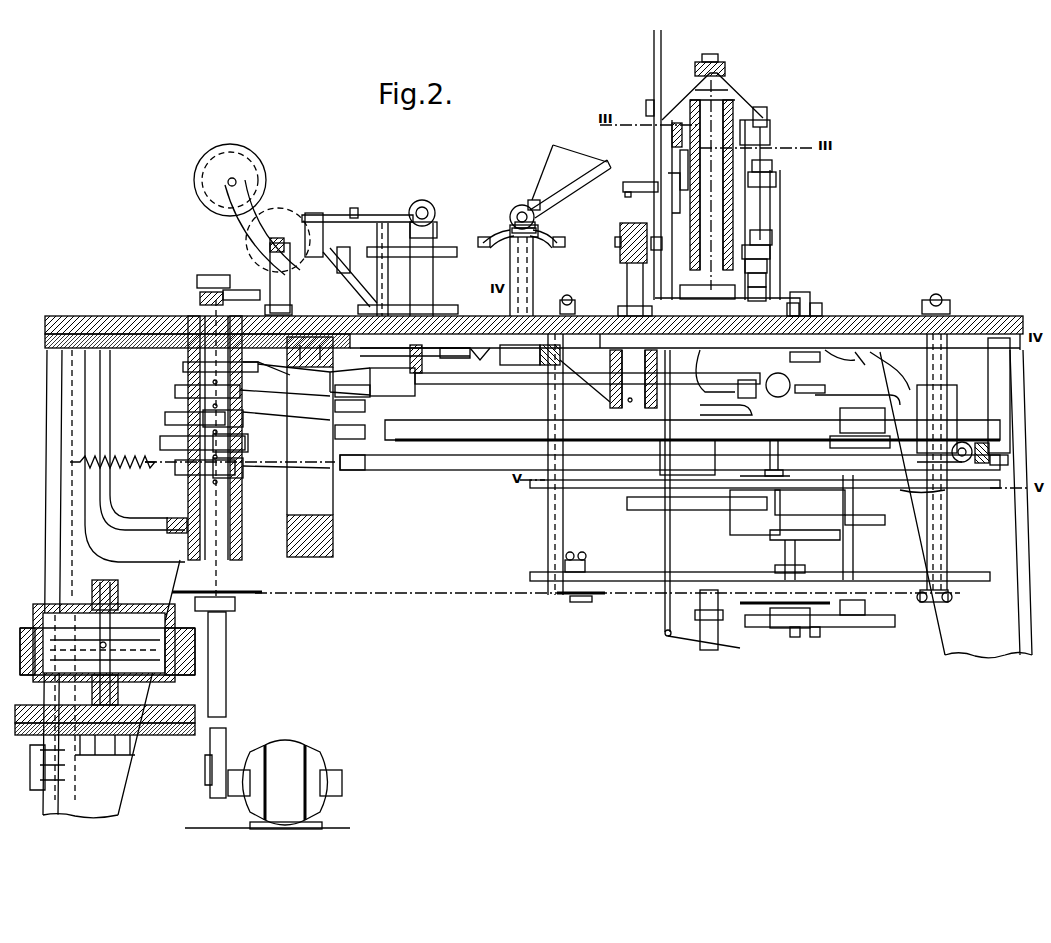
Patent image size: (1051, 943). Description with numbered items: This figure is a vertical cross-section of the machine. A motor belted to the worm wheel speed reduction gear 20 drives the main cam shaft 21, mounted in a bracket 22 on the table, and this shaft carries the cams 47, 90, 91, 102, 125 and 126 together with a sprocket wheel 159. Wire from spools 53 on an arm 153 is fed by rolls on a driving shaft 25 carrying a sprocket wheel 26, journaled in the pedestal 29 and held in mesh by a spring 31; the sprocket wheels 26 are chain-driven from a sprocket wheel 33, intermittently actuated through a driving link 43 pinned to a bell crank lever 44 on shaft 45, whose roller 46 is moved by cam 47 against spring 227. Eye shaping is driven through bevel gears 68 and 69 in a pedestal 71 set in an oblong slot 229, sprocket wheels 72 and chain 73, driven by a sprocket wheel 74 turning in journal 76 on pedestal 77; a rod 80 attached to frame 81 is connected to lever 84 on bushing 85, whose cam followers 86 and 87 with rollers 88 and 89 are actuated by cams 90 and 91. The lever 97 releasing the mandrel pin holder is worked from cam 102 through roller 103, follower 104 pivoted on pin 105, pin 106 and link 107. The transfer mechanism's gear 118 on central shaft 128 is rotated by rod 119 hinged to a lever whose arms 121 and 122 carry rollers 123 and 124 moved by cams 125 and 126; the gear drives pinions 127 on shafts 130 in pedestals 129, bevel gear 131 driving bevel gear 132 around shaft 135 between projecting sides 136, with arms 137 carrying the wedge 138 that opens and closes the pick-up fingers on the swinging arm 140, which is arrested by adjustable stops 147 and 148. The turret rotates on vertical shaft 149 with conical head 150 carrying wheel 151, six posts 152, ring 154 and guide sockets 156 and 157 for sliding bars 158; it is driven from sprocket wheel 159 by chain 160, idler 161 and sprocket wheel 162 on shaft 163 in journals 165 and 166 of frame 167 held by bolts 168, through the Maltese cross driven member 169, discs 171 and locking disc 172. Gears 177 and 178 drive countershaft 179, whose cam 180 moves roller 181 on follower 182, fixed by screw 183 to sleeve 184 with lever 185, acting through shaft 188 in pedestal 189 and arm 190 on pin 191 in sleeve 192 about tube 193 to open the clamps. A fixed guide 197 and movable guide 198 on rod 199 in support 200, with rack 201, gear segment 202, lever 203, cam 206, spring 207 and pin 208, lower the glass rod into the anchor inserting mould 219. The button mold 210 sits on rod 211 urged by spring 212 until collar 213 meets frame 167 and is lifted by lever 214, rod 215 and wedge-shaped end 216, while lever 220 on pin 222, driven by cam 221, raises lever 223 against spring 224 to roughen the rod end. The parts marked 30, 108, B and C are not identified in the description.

The worm wheel speed reduction gear 20 is at (60, 635).
The main cam shaft 21 is at (228, 497).
The bracket 22 is at (110, 490).
The driving shaft 25 is at (377, 288).
The sprocket wheel 26 is at (372, 374).
The pedestal 29 is at (433, 290).
The link 30 is at (454, 346).
The spring 31 is at (479, 347).
The sprocket wheel 33 is at (716, 371).
The driving link 43 is at (492, 470).
The bell crank lever 44 is at (345, 470).
The countershaft 45 is at (333, 530).
The roller 46 is at (245, 478).
The cam 47 is at (175, 470).
The spools 53 is at (255, 178).
The bevel gear 68 is at (425, 200).
The bevel gear 69 is at (437, 232).
The pedestal 71 is at (433, 270).
The sprocket wheel 72 is at (421, 359).
The chain 73 is at (415, 360).
The sprocket wheel 74 is at (842, 361).
The journal 76 is at (805, 363).
The pedestal 77 is at (893, 368).
The rod 80 is at (478, 420).
The frame 81 is at (765, 458).
The lever 84 is at (350, 407).
The bushing 85 is at (365, 445).
The cam follower 86 is at (280, 470).
The cam follower 87 is at (285, 413).
The roller 88 is at (214, 418).
The roller 89 is at (230, 443).
The cam 90 is at (165, 418).
The cam 91 is at (160, 442).
The lever 97 is at (385, 215).
The cam 102 is at (197, 297).
The roller 103 is at (200, 282).
The follower 104 is at (258, 300).
The pin 105 is at (300, 238).
The long pin 106 is at (310, 208).
The link 107 is at (336, 251).
The screw 108 is at (355, 208).
The gear 118 is at (596, 316).
The rod 119 is at (445, 390).
The arm 121 is at (266, 361).
The arm 122 is at (352, 394).
The roller 123 is at (183, 367).
The roller 124 is at (175, 390).
The cam 125 is at (183, 372).
The cam 126 is at (175, 397).
The pinions 127 is at (512, 358).
The shaft 128 is at (605, 402).
The pedestal 129 is at (533, 278).
The shaft 130 is at (538, 358).
The bevel gear 131 is at (536, 230).
The bevel gear 132 is at (510, 213).
The shaft 135 is at (528, 203).
The projecting sides 136 is at (515, 226).
The arms 137 is at (545, 170).
The wedge 138 is at (590, 148).
The tubular swinging arm 140 is at (570, 192).
The adjustable stop 147 is at (485, 250).
The adjustable stop 148 is at (555, 250).
The vertical shaft 149 is at (780, 200).
The conical head 150 is at (725, 70).
The wheel 151 is at (750, 100).
The posts 152 is at (767, 120).
The arm 153 is at (240, 228).
The ring 154 is at (772, 237).
The guide socket 156 is at (646, 108).
The guide socket 157 is at (655, 252).
The sliding bars 158 is at (654, 60).
The sprocket wheel 159 is at (250, 598).
The chain 160 is at (398, 597).
The idler 161 is at (555, 598).
The sprocket wheel 162 is at (820, 605).
The shaft 163 is at (795, 556).
The journal 165 is at (805, 570).
The journal 166 is at (760, 518).
The frame 167 is at (975, 484).
The bolts 168 is at (568, 298).
The driven member 169 is at (627, 503).
The discs 171 is at (844, 527).
The locking disc 172 is at (815, 503).
The gear 177 is at (800, 637).
The gear 178 is at (888, 627).
The countershaft 179 is at (865, 548).
The cam 180 is at (869, 419).
The roller 181 is at (772, 378).
The follower 182 is at (864, 434).
The screw 183 is at (975, 436).
The sleeve 184 is at (957, 400).
The lever 185 is at (869, 362).
The shaft 188 is at (766, 278).
The pedestal 189 is at (766, 292).
The second arm 190 is at (770, 251).
The pin 191 is at (767, 265).
The sleeve 192 is at (776, 180).
The tube 193 is at (668, 205).
The fixed guide 197 is at (770, 140).
The vertically movable guide 198 is at (672, 135).
The rod 199 is at (680, 157).
The support 200 is at (627, 296).
The rack 201 is at (729, 411).
The segment of a gear 202 is at (739, 389).
The lever 203 is at (835, 389).
The cam 206 is at (880, 398).
The spring 207 is at (985, 465).
The pin 208 is at (988, 368).
The button mold 210 is at (780, 166).
The rod 211 is at (810, 298).
The spring 212 is at (830, 316).
The collar 213 is at (765, 483).
The lever 214 is at (825, 530).
The rod 215 is at (885, 520).
The wedge-shaped end 216 is at (945, 492).
The anchor inserting mould 219 is at (623, 187).
The lever 220 is at (660, 640).
The cam 221 is at (818, 637).
The pin 222 is at (700, 622).
The lever 223 is at (665, 609).
The spring 224 is at (687, 457).
The spring 227 is at (125, 460).
The oblong slot 229 is at (430, 310).
The station B is at (515, 195).
The station C is at (760, 222).